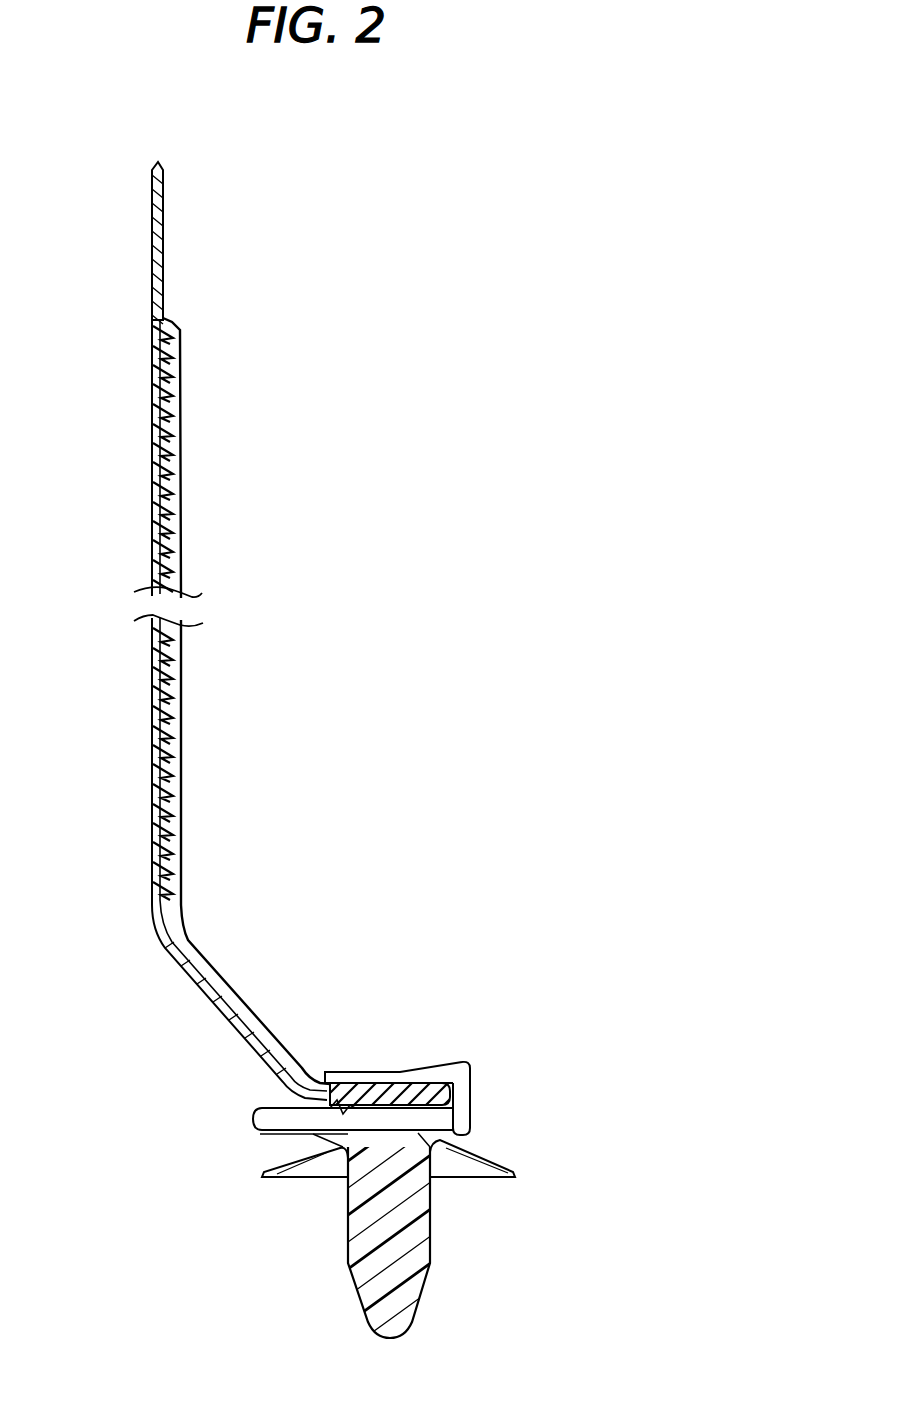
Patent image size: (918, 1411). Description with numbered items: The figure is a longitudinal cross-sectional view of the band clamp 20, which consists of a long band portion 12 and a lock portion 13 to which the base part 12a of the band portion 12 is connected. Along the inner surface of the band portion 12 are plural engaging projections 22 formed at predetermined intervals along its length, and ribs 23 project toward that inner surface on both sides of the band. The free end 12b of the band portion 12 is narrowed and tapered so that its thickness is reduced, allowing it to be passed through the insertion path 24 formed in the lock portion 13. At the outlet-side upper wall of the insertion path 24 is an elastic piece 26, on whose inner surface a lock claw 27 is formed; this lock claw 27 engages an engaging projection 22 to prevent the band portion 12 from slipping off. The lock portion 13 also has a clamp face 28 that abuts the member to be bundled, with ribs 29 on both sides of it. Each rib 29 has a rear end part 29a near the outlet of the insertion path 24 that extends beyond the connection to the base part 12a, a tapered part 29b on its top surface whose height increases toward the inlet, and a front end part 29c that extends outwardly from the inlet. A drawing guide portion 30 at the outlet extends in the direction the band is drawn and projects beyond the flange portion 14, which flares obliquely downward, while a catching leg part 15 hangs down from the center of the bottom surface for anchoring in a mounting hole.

The band portion 12 is at (186, 631).
The base part 12a is at (318, 1078).
The end 12b is at (165, 221).
The lock portion 13 is at (395, 1141).
The flange portion 14 is at (514, 1165).
The catching leg part 15 is at (347, 1258).
The band clamp 20 is at (380, 728).
The engaging projections 22 is at (180, 366).
The ribs 23 is at (182, 472).
The insertion path 24 is at (410, 1118).
The elastic piece 26 is at (340, 1085).
The lock claw 27 is at (292, 1106).
The clamp face 28 is at (394, 1082).
The ribs 29 is at (363, 1030).
The rear end part 29a is at (300, 1096).
The tapered part 29b is at (425, 1066).
The front end part 29c is at (460, 1128).
The drawing guide portion 30 is at (254, 1114).